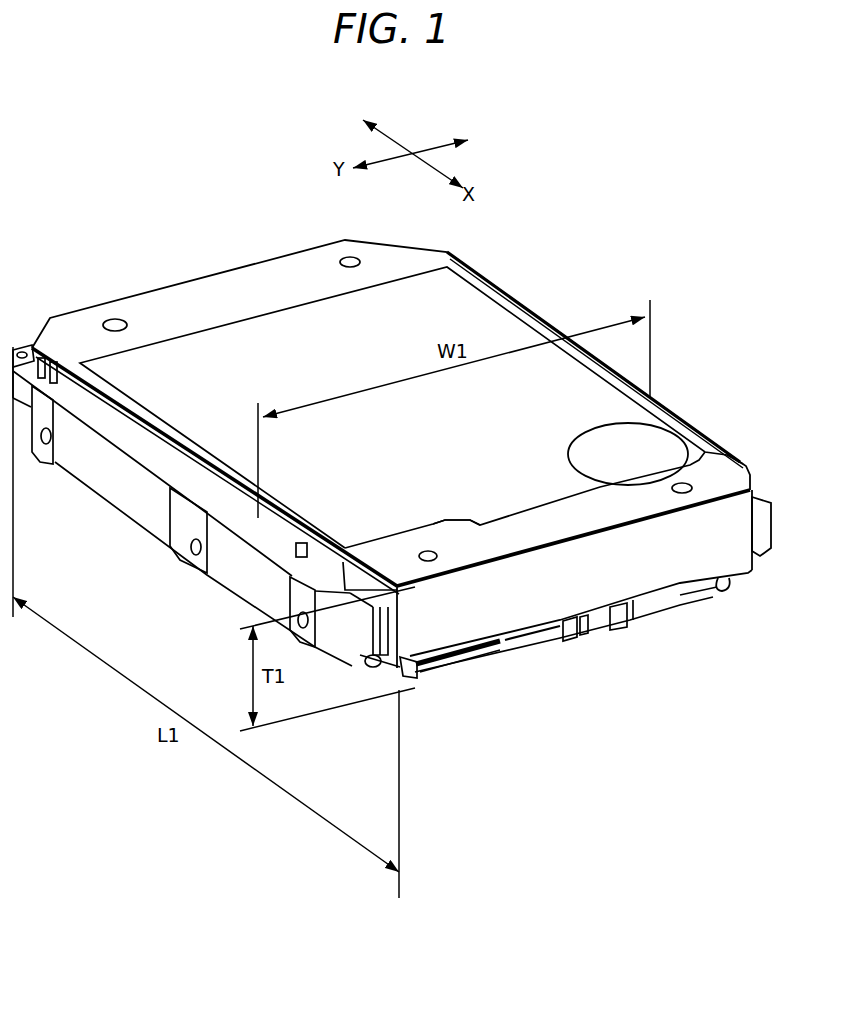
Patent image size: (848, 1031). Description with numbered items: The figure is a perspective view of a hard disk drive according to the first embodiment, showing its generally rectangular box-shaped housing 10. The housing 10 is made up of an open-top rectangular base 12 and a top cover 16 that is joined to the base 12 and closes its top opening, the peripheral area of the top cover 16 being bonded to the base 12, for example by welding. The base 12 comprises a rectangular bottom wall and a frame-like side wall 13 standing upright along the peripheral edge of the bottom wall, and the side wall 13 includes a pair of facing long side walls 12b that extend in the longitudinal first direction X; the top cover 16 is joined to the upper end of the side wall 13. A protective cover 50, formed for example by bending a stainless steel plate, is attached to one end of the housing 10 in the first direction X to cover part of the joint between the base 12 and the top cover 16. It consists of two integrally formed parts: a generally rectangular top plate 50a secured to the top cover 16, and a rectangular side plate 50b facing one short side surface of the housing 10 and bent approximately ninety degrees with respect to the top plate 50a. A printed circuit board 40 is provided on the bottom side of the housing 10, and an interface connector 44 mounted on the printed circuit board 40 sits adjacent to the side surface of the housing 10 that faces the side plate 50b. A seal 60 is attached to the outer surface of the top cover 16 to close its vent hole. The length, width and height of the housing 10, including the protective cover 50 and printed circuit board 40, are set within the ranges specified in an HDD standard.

The housing 10 is at (609, 285).
The base 12 is at (124, 533).
The long side wall 12b is at (230, 575).
The side wall 13 is at (90, 467).
The top cover 16 is at (484, 309).
The printed circuit board 40 is at (367, 671).
The interface connector 44 is at (487, 661).
The protective cover 50 is at (638, 580).
The top plate 50a is at (508, 528).
The side plate 50b is at (537, 601).
The seal 60 is at (611, 448).